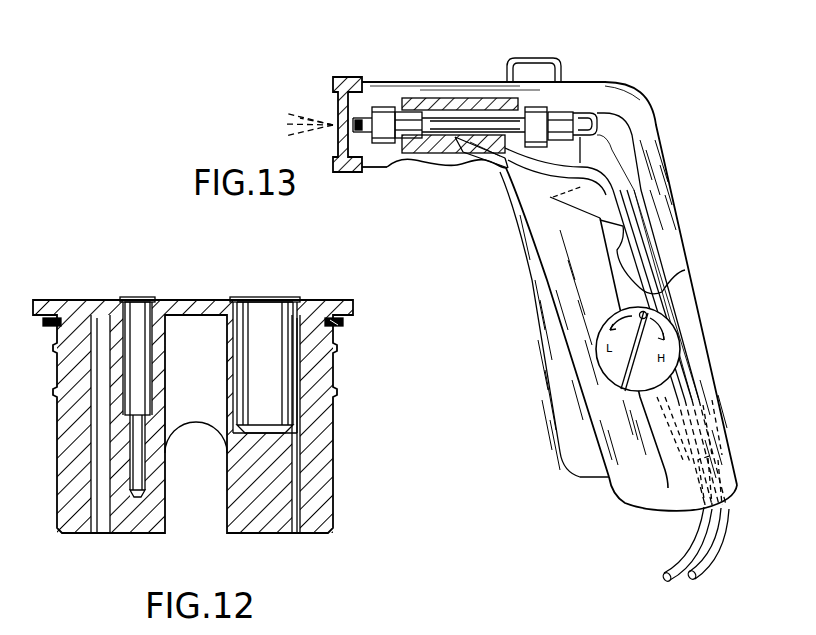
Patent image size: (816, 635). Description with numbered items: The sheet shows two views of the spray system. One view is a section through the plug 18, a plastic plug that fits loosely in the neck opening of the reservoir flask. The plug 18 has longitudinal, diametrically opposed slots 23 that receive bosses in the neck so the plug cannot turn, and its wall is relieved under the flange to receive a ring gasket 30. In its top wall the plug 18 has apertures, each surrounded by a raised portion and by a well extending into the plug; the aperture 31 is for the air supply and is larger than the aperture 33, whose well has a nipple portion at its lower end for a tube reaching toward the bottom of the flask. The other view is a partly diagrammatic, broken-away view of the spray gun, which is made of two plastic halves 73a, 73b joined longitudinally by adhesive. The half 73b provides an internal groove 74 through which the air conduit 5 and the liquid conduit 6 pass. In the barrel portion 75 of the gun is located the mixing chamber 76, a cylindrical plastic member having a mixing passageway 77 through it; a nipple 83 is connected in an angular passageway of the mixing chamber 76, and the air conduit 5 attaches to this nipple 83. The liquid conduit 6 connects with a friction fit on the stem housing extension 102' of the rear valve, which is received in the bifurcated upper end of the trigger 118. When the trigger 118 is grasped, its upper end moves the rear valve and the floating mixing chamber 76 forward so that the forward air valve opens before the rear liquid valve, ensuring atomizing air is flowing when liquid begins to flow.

In FIG. 12, the plug 18 is at (332, 483).
In FIG. 12, the longitudinal slots 23 is at (190, 507).
In FIG. 12, the ring gasket 30 is at (343, 323).
In FIG. 12, the aperture 31 is at (263, 313).
In FIG. 12, the aperture 33 is at (142, 313).
In FIG. 13, the barrel portion 75 is at (438, 97).
In FIG. 13, the mixing chamber 76 is at (482, 103).
In FIG. 13, the mixing passageway 77 is at (435, 128).
In FIG. 13, the nipple 83 is at (500, 153).
In FIG. 13, the stem housing extension 102' is at (619, 84).
In FIG. 13, the air conduit 5 is at (560, 185).
In FIG. 13, the liquid conduit 6 is at (600, 120).
In FIG. 13, the gun half 73b is at (677, 240).
In FIG. 13, the gun half 73a is at (622, 482).
In FIG. 13, the trigger 118 is at (560, 453).
In FIG. 13, the internal groove 74 is at (712, 413).